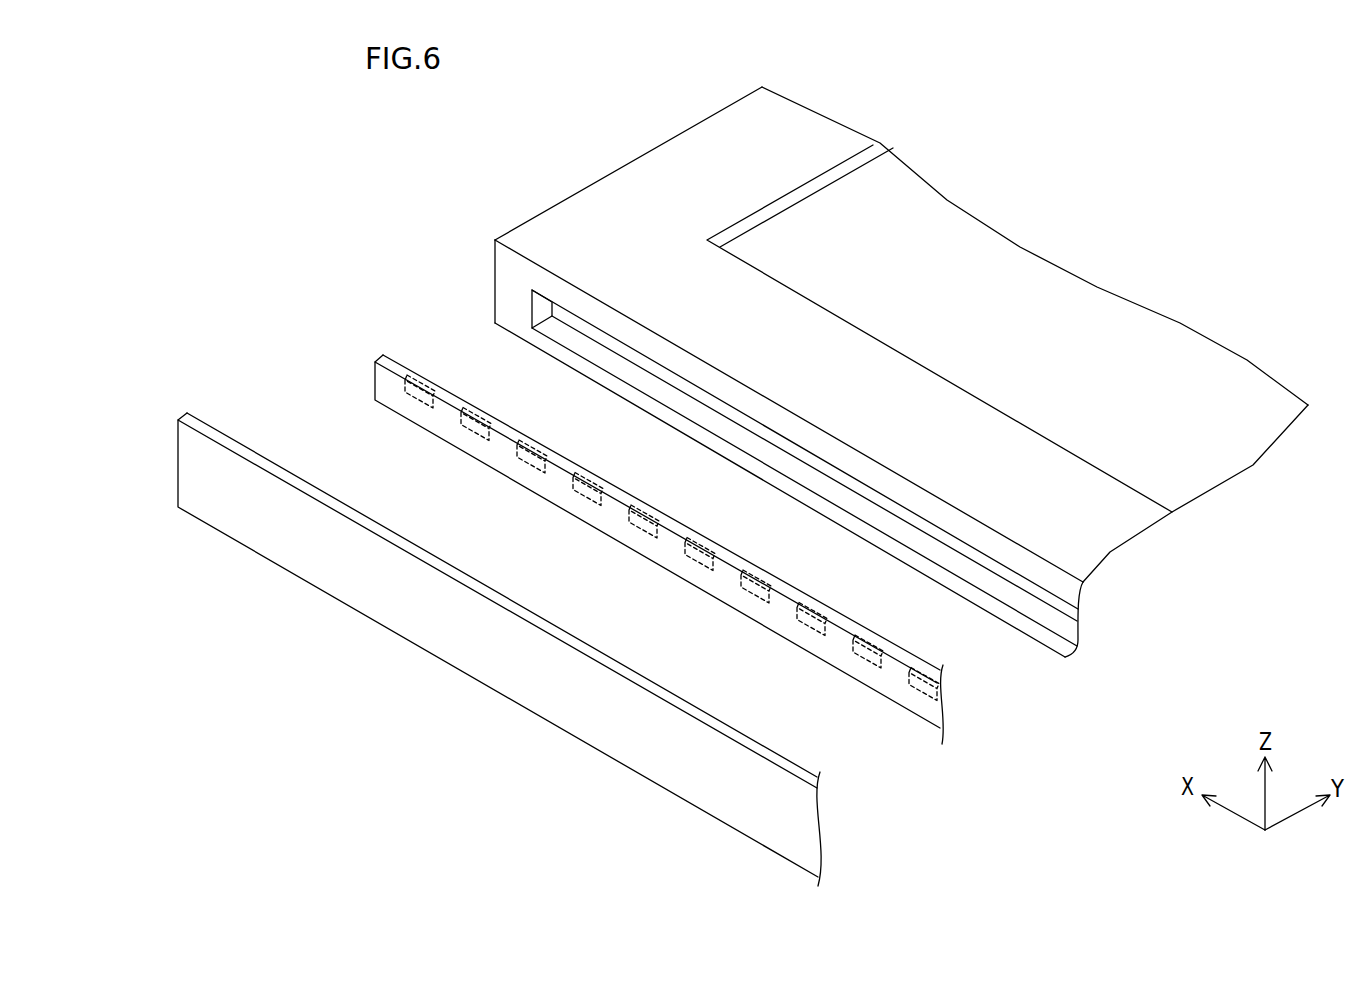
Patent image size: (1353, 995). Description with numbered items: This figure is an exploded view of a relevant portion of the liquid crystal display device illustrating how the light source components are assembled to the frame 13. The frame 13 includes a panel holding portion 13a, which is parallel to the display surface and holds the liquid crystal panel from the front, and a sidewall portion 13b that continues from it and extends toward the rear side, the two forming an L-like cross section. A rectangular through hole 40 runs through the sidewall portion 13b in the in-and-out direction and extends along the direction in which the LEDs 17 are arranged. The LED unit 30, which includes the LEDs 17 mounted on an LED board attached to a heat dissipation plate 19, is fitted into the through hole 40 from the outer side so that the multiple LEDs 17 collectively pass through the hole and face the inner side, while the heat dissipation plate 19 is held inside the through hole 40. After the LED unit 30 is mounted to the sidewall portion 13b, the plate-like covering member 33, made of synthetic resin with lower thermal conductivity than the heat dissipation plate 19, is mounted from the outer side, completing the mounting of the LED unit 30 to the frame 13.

The frame 13 is at (697, 125).
The panel holding portion 13a is at (743, 303).
The sidewall portion 13b is at (507, 266).
The through hole 40 is at (546, 318).
The LEDs 17 is at (533, 442).
The heat dissipation plate 19 is at (385, 385).
The LED unit 30 is at (578, 516).
The covering member 33 is at (197, 473).